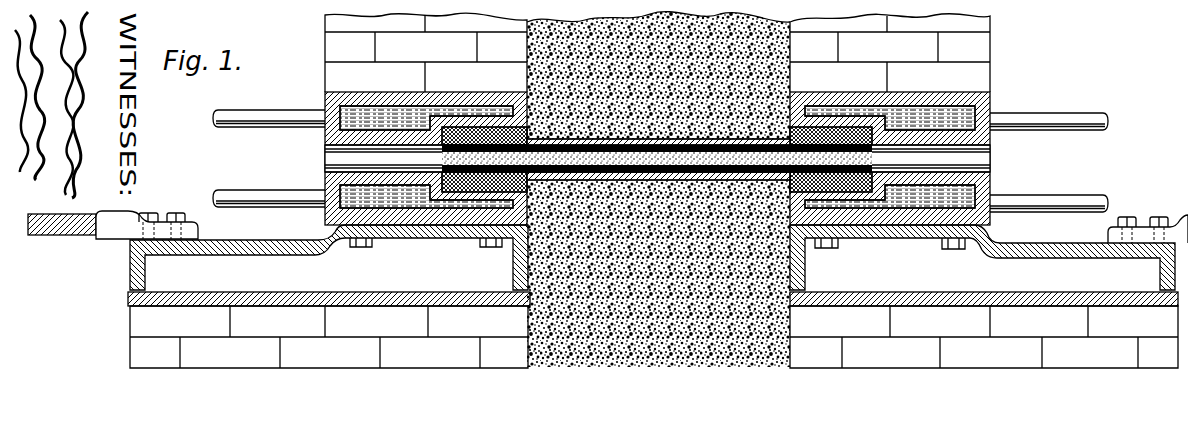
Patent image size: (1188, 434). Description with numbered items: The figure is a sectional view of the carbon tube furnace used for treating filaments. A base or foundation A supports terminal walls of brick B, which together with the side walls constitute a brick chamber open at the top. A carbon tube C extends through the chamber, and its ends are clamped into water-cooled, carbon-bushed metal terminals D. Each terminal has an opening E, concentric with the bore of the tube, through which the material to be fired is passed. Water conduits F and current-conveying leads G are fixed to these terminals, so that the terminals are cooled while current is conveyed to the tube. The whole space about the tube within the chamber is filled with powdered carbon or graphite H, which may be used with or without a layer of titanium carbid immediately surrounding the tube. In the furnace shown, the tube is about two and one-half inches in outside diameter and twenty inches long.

The base or foundation A is at (492, 353).
The terminal walls of brick B is at (340, 70).
The carbon tube C is at (555, 183).
The metal terminals D is at (326, 136).
The openings E is at (336, 160).
The water conduits F is at (252, 117).
The current-conveying leads G is at (160, 227).
The powdered carbon or graphite H is at (667, 325).